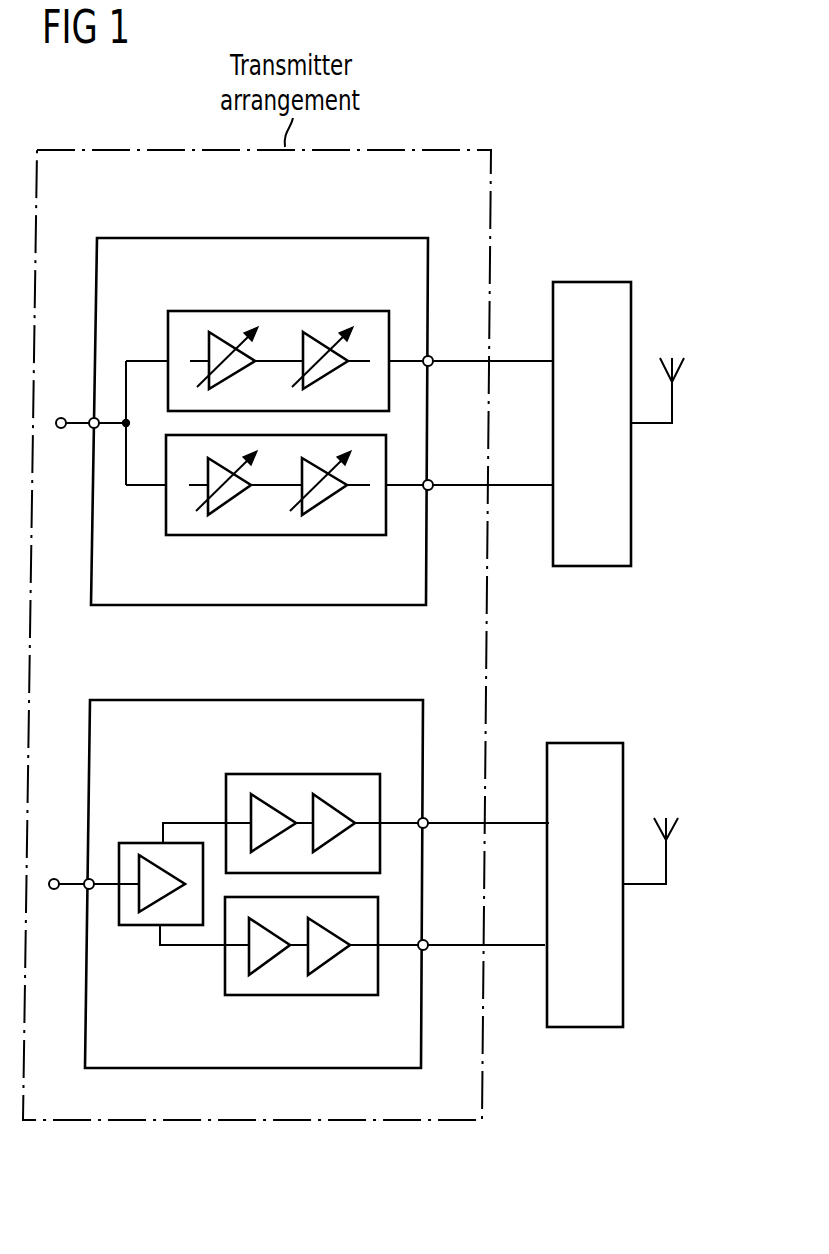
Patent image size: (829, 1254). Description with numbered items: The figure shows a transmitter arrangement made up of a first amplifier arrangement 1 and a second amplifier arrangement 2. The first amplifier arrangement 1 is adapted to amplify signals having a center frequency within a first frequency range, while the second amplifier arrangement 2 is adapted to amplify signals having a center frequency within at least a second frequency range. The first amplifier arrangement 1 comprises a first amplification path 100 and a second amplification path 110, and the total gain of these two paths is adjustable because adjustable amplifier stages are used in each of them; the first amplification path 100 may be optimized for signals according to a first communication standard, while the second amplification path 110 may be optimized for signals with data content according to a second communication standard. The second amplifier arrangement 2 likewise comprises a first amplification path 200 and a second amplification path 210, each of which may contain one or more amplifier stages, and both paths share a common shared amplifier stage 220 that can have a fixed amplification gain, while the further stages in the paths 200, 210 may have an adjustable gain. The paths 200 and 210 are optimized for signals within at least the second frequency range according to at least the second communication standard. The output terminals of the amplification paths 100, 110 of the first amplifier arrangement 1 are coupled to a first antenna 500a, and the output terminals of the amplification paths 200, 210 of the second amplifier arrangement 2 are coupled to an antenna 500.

The first amplifier arrangement 1 is at (265, 237).
The first amplification path 100 is at (278, 308).
The second amplification path 110 is at (277, 537).
The first antenna 500a is at (680, 368).
The second amplifier arrangement 2 is at (259, 698).
The first amplification path 200 is at (305, 768).
The second amplification path 210 is at (302, 997).
The shared amplifier stage 220 is at (140, 927).
The antenna 500 is at (674, 830).